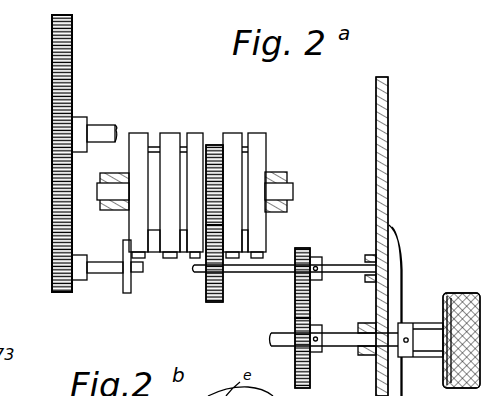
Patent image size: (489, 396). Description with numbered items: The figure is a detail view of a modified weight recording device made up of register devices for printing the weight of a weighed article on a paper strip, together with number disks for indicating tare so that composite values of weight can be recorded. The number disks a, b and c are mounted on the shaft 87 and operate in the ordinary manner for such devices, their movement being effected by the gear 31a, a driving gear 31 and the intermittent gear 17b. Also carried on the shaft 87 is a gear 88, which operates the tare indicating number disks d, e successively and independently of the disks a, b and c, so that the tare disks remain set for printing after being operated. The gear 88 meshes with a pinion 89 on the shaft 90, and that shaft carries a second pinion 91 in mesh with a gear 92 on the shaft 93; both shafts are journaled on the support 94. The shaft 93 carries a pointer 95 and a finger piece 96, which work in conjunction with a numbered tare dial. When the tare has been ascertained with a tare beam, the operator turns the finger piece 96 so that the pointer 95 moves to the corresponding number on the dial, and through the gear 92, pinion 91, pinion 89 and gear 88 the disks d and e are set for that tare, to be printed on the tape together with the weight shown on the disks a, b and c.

The driving gear 31 is at (53, 77).
The gear 31a is at (63, 292).
The intermittent gear 17b is at (125, 290).
The shaft 87 is at (300, 193).
The number disk a is at (133, 133).
The number disk b is at (165, 132).
The number disk c is at (196, 132).
The tare indicating number disk d is at (240, 133).
The tare indicating number disk e is at (264, 133).
The gear 88 is at (213, 143).
The pinion 89 is at (214, 303).
The shaft 90 is at (258, 268).
The pinion 91 is at (301, 248).
The gear 92 is at (311, 376).
The shaft 93 is at (330, 333).
The support 94 is at (381, 162).
The pointer 95 is at (401, 237).
The finger piece 96 is at (453, 293).